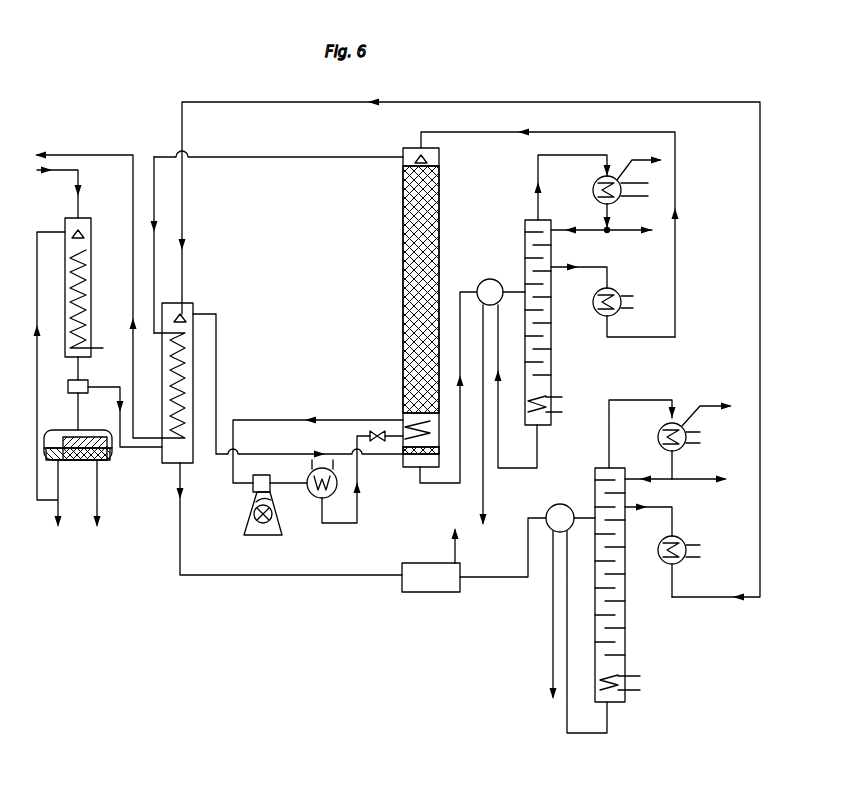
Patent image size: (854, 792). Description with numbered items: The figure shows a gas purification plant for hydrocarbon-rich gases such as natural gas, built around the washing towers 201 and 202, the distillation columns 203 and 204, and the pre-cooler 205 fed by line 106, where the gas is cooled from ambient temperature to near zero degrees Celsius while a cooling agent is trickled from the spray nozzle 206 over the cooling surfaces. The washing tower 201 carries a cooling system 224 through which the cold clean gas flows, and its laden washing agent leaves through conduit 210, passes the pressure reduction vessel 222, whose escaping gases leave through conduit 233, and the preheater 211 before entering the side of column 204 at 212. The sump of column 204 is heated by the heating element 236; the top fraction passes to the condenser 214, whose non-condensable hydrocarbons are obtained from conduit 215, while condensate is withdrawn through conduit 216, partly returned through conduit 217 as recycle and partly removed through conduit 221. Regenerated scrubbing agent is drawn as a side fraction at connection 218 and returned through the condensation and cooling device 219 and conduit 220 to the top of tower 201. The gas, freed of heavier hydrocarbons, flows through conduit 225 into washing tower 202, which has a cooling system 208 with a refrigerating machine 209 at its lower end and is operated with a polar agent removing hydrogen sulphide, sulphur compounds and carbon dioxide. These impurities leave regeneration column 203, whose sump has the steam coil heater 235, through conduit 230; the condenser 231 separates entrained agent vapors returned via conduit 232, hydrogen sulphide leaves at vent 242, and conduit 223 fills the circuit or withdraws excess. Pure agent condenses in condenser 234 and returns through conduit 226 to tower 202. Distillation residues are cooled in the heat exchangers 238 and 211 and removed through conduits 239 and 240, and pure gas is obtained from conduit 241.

The separator feed line 106 is at (37, 373).
The washing tower 201 is at (163, 389).
The washing tower 202 is at (440, 232).
The distillation column 203 is at (551, 349).
The distillation column 204 is at (626, 620).
The pre-cooler 205 is at (88, 269).
The spray nozzle 206 is at (70, 247).
The cooling system 208 is at (433, 436).
The refrigerating machine 209 is at (318, 476).
The conduit 210 is at (238, 577).
The preheater 211 is at (533, 612).
The side connection 212 is at (581, 524).
The condenser 214 is at (686, 425).
The conduit 215 is at (707, 406).
The conduit 216 is at (676, 452).
The conduit 217 is at (655, 477).
The connection 218 is at (672, 507).
The condensation and cooling device 219 is at (680, 537).
The conduit 220 is at (438, 110).
The conduit 221 is at (703, 489).
The pressure reduction vessel 222 is at (421, 594).
The conduit 223 is at (637, 243).
The cooling system 224 is at (166, 366).
The conduit 225 is at (217, 369).
The conduit 226 is at (419, 138).
The conduit 230 is at (538, 194).
The condenser 231 is at (625, 196).
The conduit 232 is at (584, 244).
The conduit 233 is at (437, 545).
The condenser 234 is at (613, 301).
The steam coil heater 235 is at (550, 395).
The heating element 236 is at (635, 686).
The heat exchanger 238 is at (478, 372).
The conduit 239 is at (551, 699).
The conduit 240 is at (483, 488).
The conduit 241 is at (98, 288).
The vent 242 is at (643, 159).